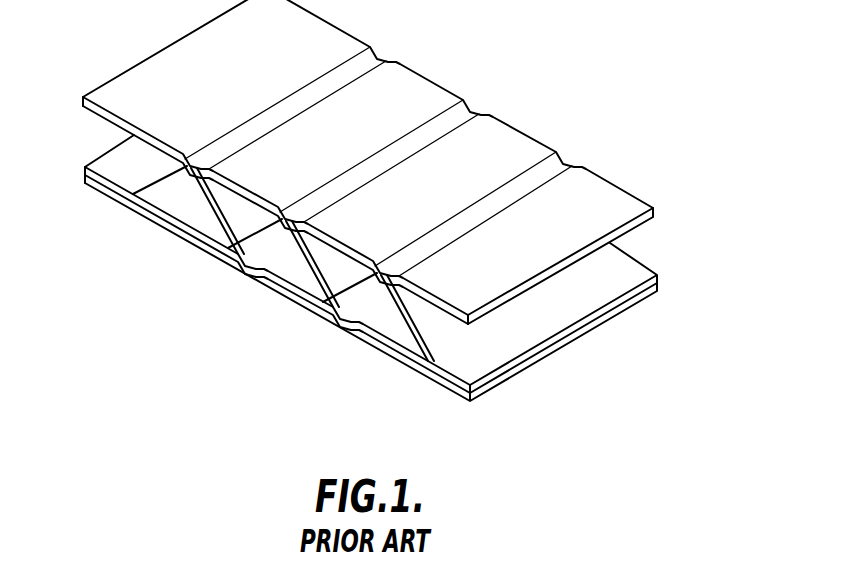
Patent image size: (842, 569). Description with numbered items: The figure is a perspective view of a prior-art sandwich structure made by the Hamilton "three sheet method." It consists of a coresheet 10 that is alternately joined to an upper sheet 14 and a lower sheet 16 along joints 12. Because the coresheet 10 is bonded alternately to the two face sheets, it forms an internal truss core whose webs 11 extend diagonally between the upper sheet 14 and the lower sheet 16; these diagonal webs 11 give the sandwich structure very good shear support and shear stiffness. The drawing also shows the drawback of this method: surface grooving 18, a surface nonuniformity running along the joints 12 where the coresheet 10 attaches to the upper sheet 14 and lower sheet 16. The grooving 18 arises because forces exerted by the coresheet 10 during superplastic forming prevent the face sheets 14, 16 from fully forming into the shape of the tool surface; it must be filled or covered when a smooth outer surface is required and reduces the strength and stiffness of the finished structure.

The coresheet 10 is at (517, 337).
The webs 11 is at (167, 197).
The joints 12 is at (230, 253).
The upper sheet 14 is at (655, 210).
The lower sheet 16 is at (130, 207).
The surface grooving 18 is at (487, 203).